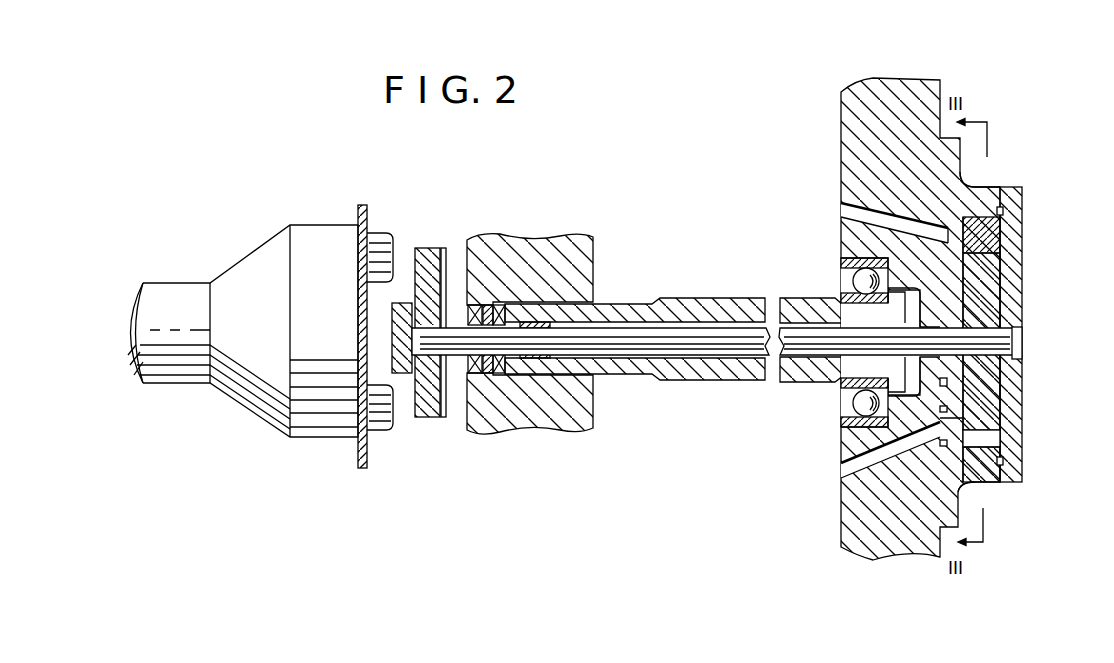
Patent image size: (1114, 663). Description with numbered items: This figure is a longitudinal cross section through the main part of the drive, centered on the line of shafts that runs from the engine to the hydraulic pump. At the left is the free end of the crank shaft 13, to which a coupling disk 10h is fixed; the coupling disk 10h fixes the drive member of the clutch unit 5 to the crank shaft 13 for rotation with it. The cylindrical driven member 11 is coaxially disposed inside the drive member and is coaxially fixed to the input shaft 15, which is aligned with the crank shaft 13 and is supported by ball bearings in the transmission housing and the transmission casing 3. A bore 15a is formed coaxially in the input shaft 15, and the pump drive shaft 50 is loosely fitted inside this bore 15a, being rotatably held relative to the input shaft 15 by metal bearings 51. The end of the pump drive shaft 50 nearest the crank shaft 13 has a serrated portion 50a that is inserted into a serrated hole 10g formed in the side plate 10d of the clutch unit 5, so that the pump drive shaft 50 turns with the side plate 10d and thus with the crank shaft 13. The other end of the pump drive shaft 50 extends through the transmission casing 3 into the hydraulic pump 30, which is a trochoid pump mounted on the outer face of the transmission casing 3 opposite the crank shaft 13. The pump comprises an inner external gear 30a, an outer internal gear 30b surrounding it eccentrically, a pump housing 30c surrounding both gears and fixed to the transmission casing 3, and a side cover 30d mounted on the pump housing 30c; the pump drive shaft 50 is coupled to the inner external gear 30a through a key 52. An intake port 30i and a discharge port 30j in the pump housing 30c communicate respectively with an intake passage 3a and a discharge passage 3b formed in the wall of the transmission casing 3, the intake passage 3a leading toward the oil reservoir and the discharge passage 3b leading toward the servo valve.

The transmission casing 3 is at (882, 86).
The intake passage 3a is at (876, 470).
The discharge passage 3b is at (870, 212).
The clutch unit 5 is at (520, 222).
The side plate 10d is at (428, 250).
The serrated hole 10g is at (443, 330).
The coupling disk 10h is at (358, 214).
The driven member 11 is at (553, 240).
The crank shaft 13 is at (244, 405).
The input shaft 15 is at (690, 302).
The bore 15a is at (712, 346).
The hydraulic pump 30 is at (1033, 198).
The inner external gear 30a is at (1005, 283).
The outer internal gear 30b is at (978, 236).
The pump housing 30c is at (963, 186).
The side cover 30d is at (1018, 211).
The intake port 30i is at (975, 483).
The discharge port 30j is at (947, 233).
The pump drive shaft 50 is at (640, 345).
The serrated portion 50a is at (430, 353).
The metal bearings 51 is at (528, 358).
The key 52 is at (1018, 331).